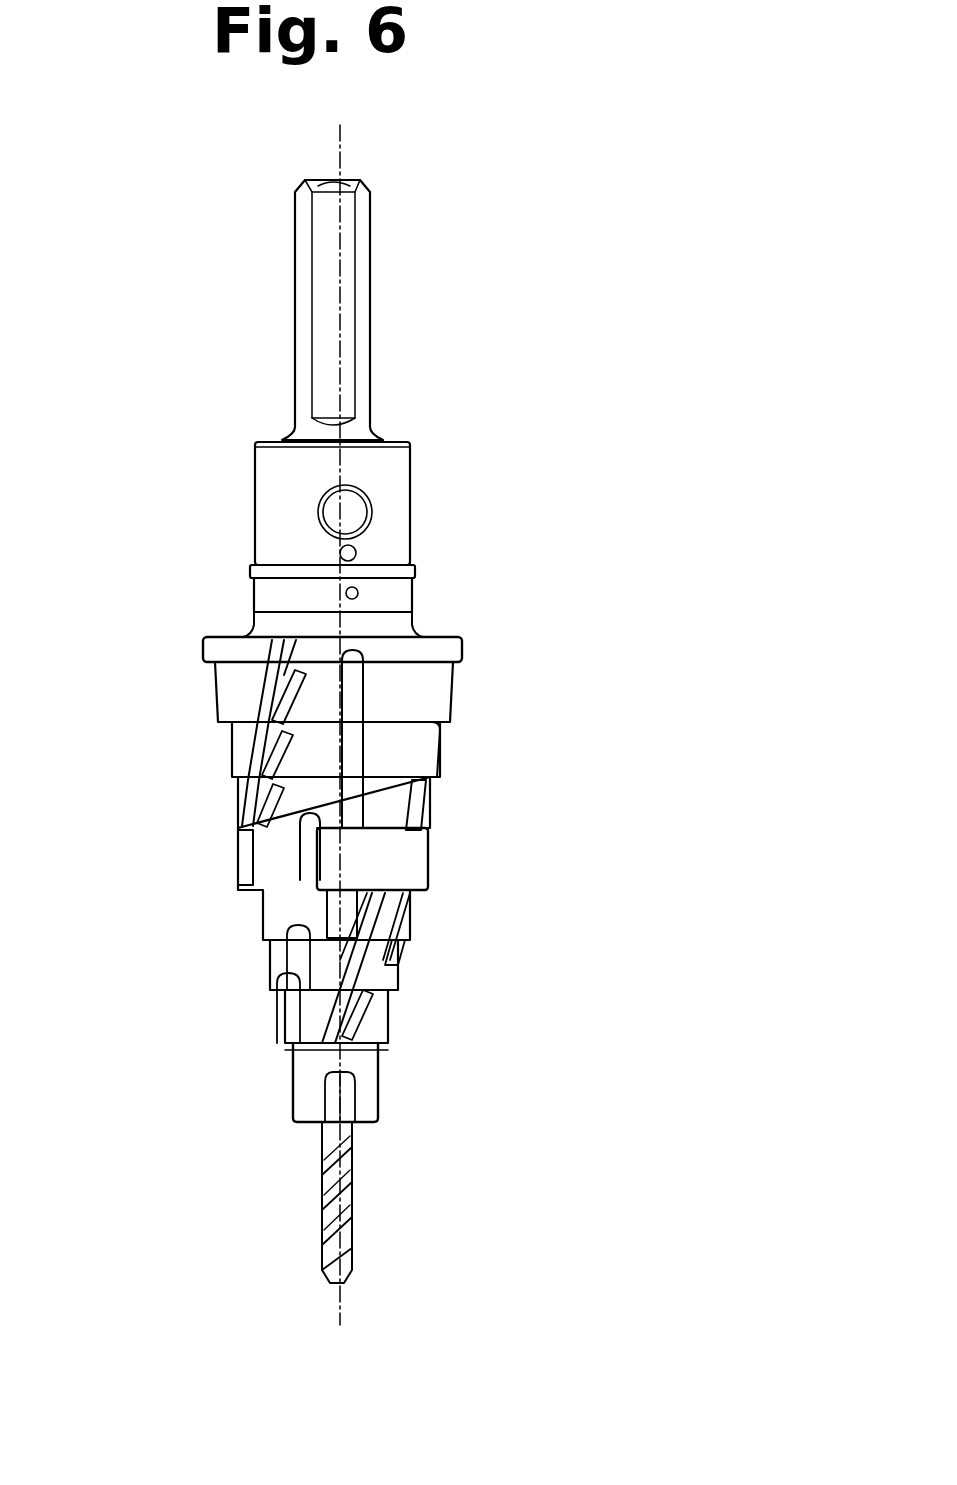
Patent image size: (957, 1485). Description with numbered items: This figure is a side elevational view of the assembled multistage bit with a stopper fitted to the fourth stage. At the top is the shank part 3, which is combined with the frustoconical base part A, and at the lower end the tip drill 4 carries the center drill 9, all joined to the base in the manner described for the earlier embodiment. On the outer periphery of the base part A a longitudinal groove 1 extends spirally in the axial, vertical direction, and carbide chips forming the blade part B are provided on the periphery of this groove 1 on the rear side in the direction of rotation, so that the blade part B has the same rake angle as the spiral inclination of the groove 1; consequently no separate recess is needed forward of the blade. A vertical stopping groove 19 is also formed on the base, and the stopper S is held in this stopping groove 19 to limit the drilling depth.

The shank part 3 is at (362, 320).
The base part A is at (437, 693).
The stopping groove 19 is at (350, 752).
The longitudinal groove 1 is at (273, 690).
The blade part B is at (253, 860).
The stopper S is at (422, 863).
The tip drill 4 is at (368, 1097).
The center drill 9 is at (352, 1207).